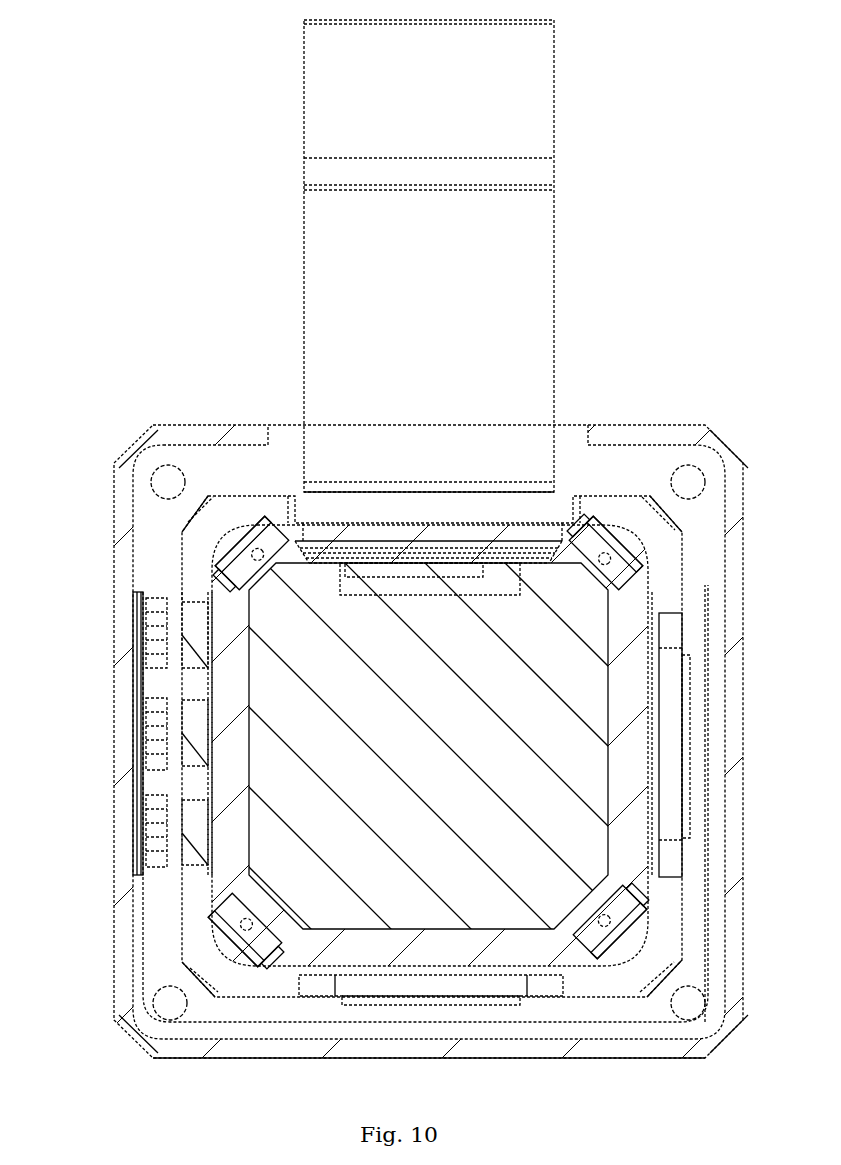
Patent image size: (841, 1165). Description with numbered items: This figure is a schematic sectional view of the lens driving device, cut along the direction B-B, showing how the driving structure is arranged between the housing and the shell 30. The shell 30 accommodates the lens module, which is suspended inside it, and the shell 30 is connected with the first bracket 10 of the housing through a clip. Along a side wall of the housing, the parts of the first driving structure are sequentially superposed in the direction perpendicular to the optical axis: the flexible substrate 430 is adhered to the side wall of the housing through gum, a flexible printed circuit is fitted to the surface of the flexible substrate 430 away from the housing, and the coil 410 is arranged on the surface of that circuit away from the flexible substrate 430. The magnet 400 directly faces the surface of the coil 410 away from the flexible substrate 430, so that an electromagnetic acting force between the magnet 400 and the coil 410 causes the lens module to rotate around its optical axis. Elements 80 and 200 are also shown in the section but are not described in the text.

The first bracket 10 is at (118, 560).
The shell 30 is at (185, 905).
The flexible circuit board 80 is at (148, 990).
The lens module 200 is at (545, 258).
The magnet 400 is at (190, 832).
The coil 410 is at (135, 752).
The flexible substrate 430 is at (135, 662).